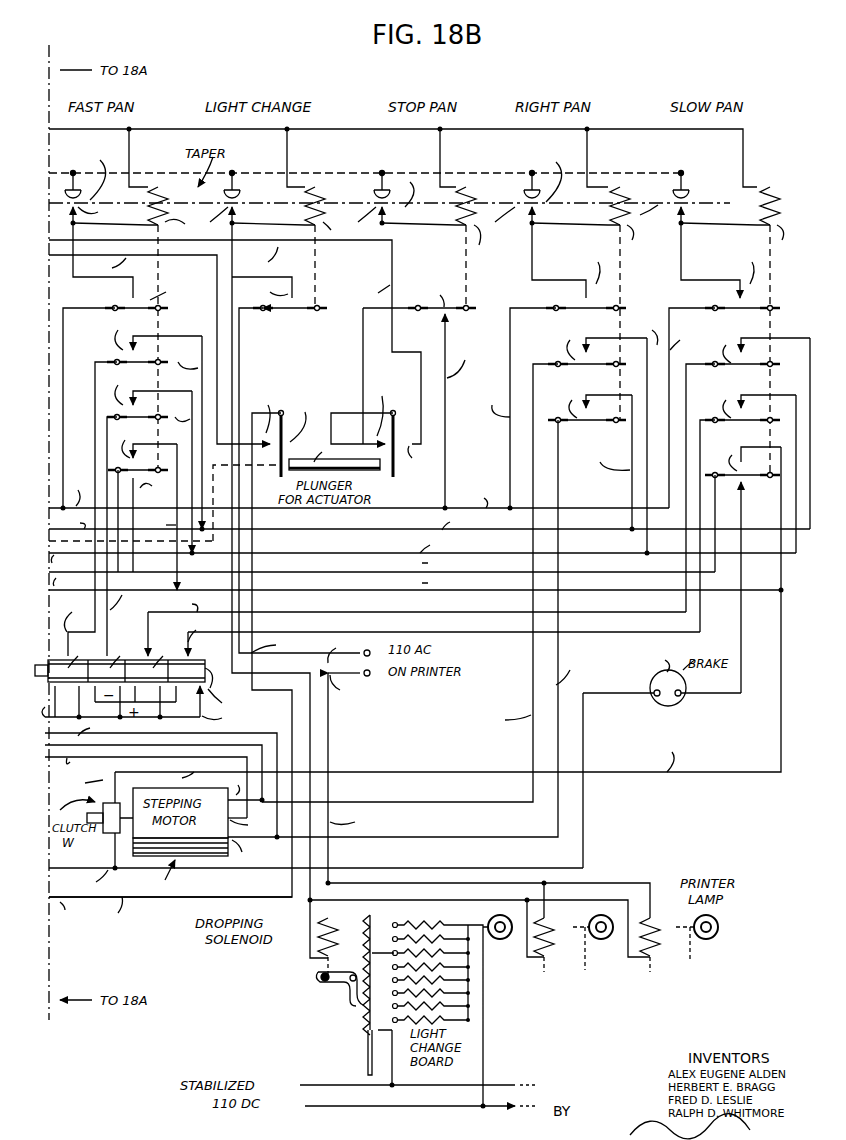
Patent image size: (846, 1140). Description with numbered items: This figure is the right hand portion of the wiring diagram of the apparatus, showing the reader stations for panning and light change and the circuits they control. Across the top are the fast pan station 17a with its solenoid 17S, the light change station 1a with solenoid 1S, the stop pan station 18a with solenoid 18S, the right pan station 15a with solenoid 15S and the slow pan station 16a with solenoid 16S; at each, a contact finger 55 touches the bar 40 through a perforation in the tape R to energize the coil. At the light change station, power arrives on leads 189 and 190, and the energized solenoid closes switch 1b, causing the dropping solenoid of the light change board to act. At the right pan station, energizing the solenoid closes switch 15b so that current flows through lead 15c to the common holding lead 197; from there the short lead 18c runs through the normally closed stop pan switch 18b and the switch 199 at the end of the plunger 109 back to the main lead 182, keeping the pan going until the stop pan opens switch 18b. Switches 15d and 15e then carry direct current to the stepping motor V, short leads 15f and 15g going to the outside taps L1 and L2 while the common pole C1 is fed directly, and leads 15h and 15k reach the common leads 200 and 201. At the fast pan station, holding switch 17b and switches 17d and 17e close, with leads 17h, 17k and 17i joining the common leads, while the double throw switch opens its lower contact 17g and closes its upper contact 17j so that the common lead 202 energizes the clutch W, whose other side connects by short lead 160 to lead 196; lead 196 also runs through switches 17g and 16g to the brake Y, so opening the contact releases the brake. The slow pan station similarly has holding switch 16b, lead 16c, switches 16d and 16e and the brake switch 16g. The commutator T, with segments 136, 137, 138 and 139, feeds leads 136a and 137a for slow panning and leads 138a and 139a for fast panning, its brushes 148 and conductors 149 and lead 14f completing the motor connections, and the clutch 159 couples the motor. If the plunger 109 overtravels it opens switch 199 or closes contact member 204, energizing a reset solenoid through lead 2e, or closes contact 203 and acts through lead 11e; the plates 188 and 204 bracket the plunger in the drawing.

The bar 40 is at (378, 184).
The contact finger 55 is at (368, 220).
The tape R is at (325, 181).
The fast pan station 17a is at (150, 188).
The fast pan solenoid 17S is at (181, 228).
The light change station 1a is at (311, 190).
The light change solenoid 1S is at (335, 229).
The stop pan station 18a is at (463, 190).
The stop pan solenoid 18S is at (489, 242).
The right pan station 15a is at (615, 190).
The right pan solenoid 15S is at (641, 237).
The slow pan station 16a is at (775, 195).
The slow pan solenoid 16S is at (793, 237).
The lead 2e is at (159, 349).
The lead 11e is at (315, 274).
The fast pan holding switch 17b is at (129, 394).
The switch 17d is at (143, 334).
The lead 17h is at (135, 496).
The switch 17e is at (148, 387).
The lead 17k is at (149, 523).
The upper contact 17j is at (145, 441).
The normally closed switch 17g is at (142, 517).
The lead 17i is at (158, 524).
The switch 1b is at (299, 469).
The contact member 204 is at (170, 643).
The normally closed switch 199 is at (306, 418).
The plunger 109 is at (334, 455).
The contact plate 188 is at (365, 392).
The contact 203 is at (423, 457).
The stop pan switch 18b is at (419, 294).
The lead 18c is at (464, 411).
The switch 15b is at (568, 379).
The lead 15c is at (490, 402).
The single pole single throw switch 15d is at (454, 565).
The lead 15h is at (646, 328).
The single pole single throw switch 15e is at (454, 610).
The lead 15k is at (609, 457).
The slow pan holding switch 16b is at (724, 379).
The lead 16c is at (689, 333).
The switch 16d is at (748, 473).
The switch 16e is at (748, 510).
The normally closed switch 16g is at (448, 605).
The common lead 197 is at (359, 491).
The common lead 201 is at (429, 520).
The common lead 200 is at (422, 548).
The lead 196 is at (382, 734).
The common lead 202 is at (415, 678).
The lead 138a is at (72, 613).
The lead 139a is at (131, 593).
The lead 136a is at (417, 625).
The lead 137a is at (442, 635).
The commutator segment 138 is at (85, 653).
The commutator segment 139 is at (124, 653).
The commutator segment 136 is at (167, 653).
The commutator segment 137 is at (138, 677).
The brushes 148 is at (121, 703).
The conductors 149 is at (161, 773).
The commutator T is at (218, 704).
The lead 14f is at (79, 766).
The clutch 159 is at (94, 820).
The short lead 160 is at (316, 879).
The main lead 182 is at (203, 782).
The stepping motor V is at (180, 836).
The outside tap L1 is at (241, 784).
The common pole C1 is at (248, 823).
The outside tap L2 is at (252, 849).
The lead 189 is at (349, 655).
The lead 190 is at (347, 815).
The short lead 15g is at (576, 669).
The short lead 15f is at (503, 717).
The brake Y is at (662, 756).